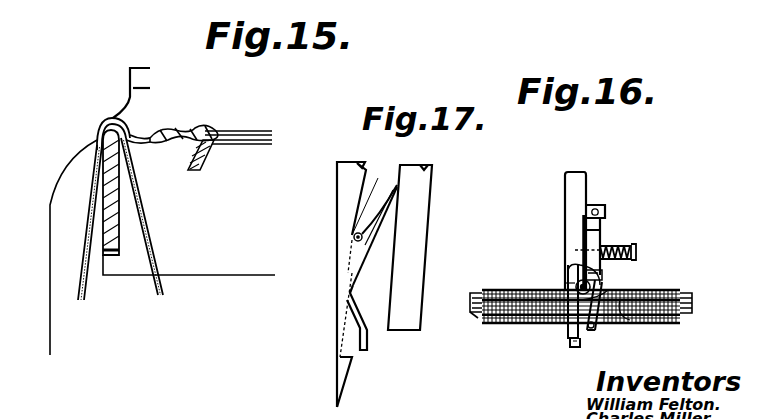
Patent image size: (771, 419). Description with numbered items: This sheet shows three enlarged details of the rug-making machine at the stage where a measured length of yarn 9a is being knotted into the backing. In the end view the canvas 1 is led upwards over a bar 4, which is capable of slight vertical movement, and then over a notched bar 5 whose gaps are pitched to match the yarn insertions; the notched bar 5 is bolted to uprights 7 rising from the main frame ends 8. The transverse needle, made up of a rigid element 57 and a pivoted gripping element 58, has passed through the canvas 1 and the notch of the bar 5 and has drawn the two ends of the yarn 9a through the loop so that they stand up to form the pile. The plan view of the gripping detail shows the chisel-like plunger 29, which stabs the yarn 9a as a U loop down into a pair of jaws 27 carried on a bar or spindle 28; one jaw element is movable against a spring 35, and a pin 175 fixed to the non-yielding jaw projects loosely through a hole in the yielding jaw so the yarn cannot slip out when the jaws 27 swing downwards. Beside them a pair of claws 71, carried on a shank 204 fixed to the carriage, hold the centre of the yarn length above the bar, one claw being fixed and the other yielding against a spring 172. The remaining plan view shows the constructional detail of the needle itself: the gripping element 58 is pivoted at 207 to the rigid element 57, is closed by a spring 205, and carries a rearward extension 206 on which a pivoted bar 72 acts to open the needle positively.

In FIG. 15, the canvas 1 is at (80, 270).
In FIG. 16, the canvas 1 is at (682, 289).
In FIG. 16, the bar 4 is at (478, 318).
In FIG. 16, the notched bar 5 is at (470, 302).
In FIG. 15, the uprights 7 is at (54, 218).
In FIG. 15, the main frame ends 8 is at (200, 275).
In FIG. 15, the measured length of yarn 9a is at (177, 125).
In FIG. 16, the measured length of yarn 9a is at (607, 288).
In FIG. 16, the jaws 27 is at (571, 324).
In FIG. 16, the bar or spindle 28 is at (527, 316).
In FIG. 16, the chisel-like plunger 29 is at (576, 278).
In FIG. 16, the spring 35 is at (630, 320).
In FIG. 15, the rigid element of transverse needle 57 is at (234, 131).
In FIG. 17, the rigid element of transverse needle 57 is at (338, 376).
In FIG. 15, the pivoted gripping element of transverse needle 58 is at (259, 144).
In FIG. 17, the pivoted gripping element of transverse needle 58 is at (368, 348).
In FIG. 16, the claws 71 is at (631, 258).
In FIG. 17, the bar 72 is at (436, 208).
In FIG. 16, the spring 172 is at (622, 247).
In FIG. 16, the pin 175 is at (586, 277).
In FIG. 16, the shank 204 is at (577, 188).
In FIG. 17, the spring 205 is at (378, 178).
In FIG. 17, the rearward extension 206 is at (376, 265).
In FIG. 17, the pivot 207 is at (343, 290).